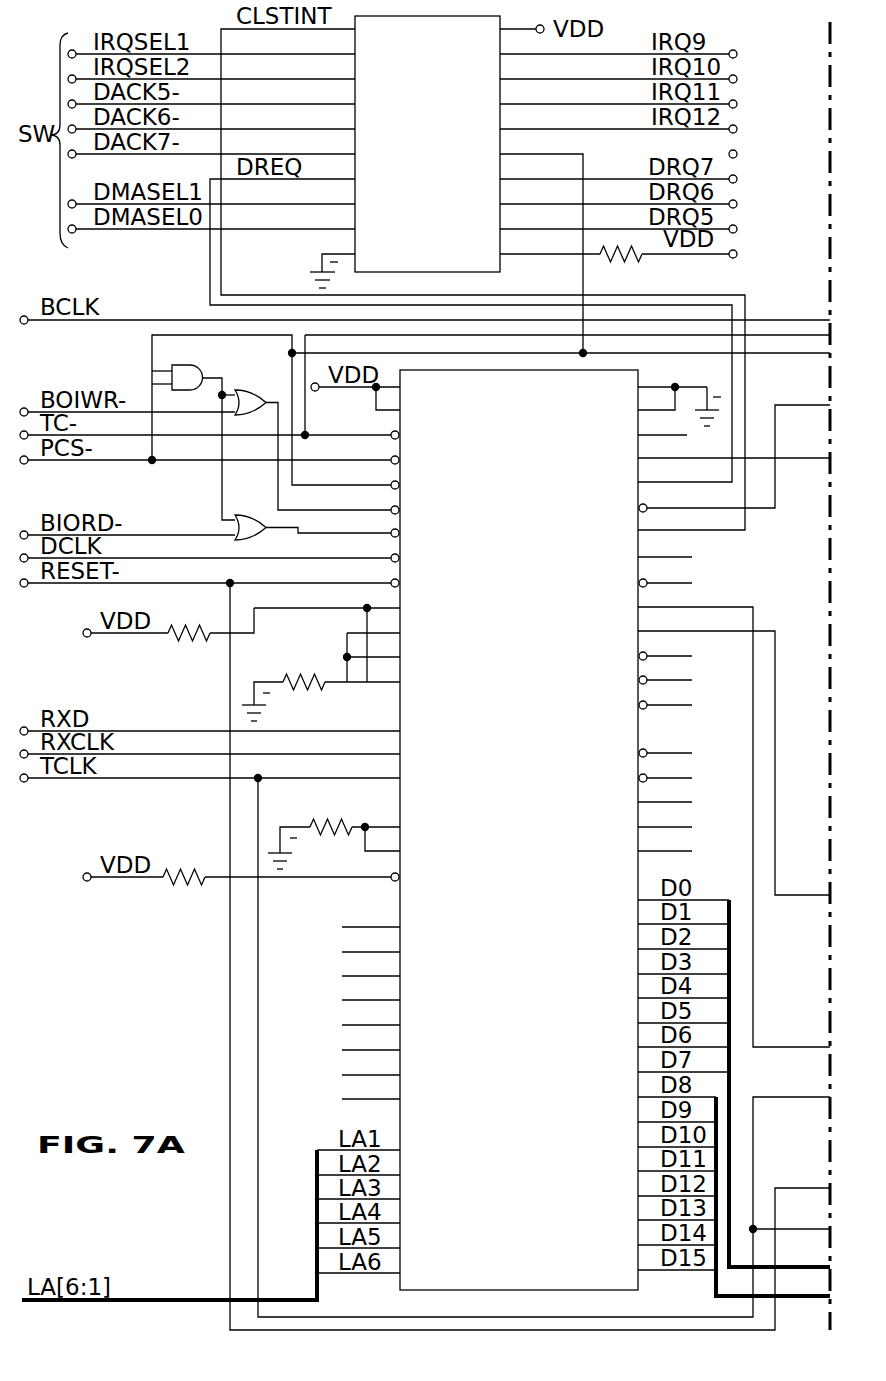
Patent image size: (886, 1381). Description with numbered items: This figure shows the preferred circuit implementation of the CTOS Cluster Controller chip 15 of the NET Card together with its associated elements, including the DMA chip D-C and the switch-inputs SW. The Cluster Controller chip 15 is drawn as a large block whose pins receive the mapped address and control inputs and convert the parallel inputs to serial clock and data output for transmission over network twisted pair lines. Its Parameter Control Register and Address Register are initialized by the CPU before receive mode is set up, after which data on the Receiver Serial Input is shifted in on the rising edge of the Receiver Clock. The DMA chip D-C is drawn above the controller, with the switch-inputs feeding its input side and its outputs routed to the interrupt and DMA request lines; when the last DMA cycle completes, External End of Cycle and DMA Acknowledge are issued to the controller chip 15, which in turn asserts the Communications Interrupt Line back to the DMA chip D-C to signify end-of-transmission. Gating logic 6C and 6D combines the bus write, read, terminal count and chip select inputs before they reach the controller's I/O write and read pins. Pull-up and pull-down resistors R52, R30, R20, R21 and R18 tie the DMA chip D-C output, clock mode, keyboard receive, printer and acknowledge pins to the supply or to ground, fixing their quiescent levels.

The CTOS Cluster Controller stage 15 is at (593, 1290).
The DMA chip D-C is at (475, 272).
The AND gate 6C is at (193, 429).
The OR gate 6D is at (313, 452).
The resistor R52 is at (618, 271).
The resistor R30 is at (168, 617).
The resistor R20 is at (321, 681).
The resistor R21 is at (334, 828).
The resistor R18 is at (237, 861).